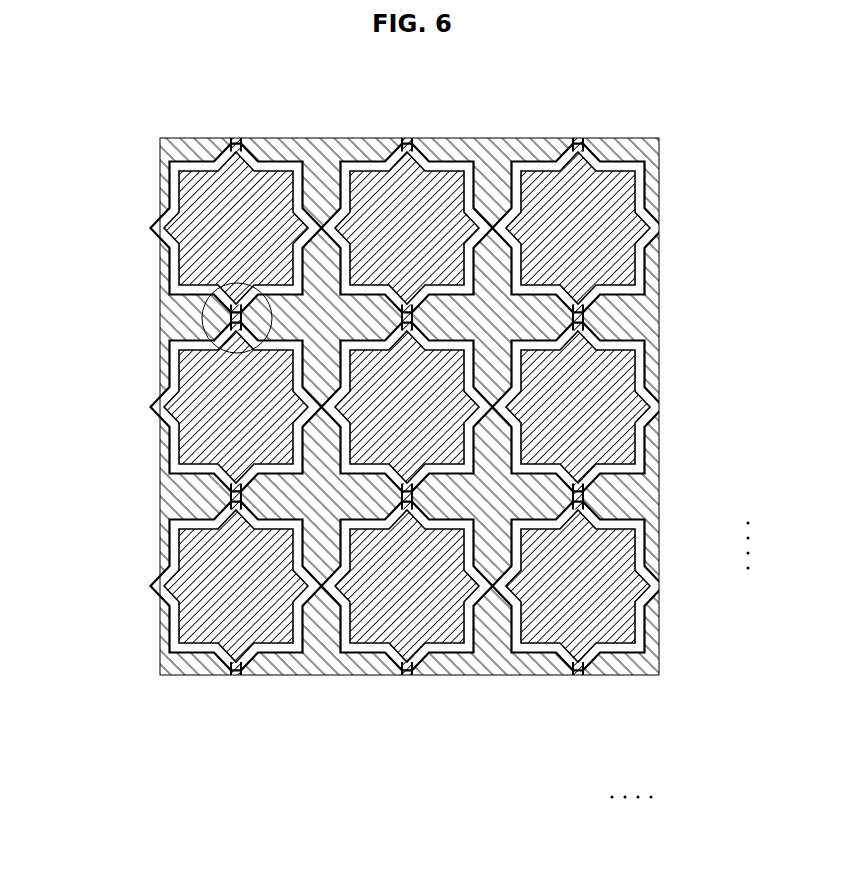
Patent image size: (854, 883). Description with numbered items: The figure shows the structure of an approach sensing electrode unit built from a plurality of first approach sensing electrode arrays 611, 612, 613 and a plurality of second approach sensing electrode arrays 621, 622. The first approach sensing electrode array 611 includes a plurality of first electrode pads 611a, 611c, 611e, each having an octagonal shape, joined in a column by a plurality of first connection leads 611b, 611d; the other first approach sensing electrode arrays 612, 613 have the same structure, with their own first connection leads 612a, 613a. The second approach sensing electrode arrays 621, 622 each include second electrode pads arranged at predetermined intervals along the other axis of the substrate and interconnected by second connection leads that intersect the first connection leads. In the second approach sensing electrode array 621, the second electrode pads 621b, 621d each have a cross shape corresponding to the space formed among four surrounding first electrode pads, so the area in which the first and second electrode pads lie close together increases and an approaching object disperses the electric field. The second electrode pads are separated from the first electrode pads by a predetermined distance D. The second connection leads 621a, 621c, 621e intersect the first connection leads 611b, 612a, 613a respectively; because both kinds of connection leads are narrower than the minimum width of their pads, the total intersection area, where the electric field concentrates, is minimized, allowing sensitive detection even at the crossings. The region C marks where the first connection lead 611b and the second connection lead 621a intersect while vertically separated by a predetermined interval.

The first approach sensing electrode array 611 is at (188, 473).
The first approach sensing electrode array 612 is at (407, 452).
The first approach sensing electrode array 613 is at (578, 452).
The first electrode pad 611a is at (213, 230).
The first connection lead 611b is at (226, 327).
The first electrode pad 611c is at (206, 410).
The first connection lead 611d is at (232, 494).
The first electrode pad 611e is at (212, 593).
The first connection lead 612a is at (408, 313).
The first connection lead 613a is at (500, 267).
The second approach sensing electrode array 621 is at (462, 369).
The second connection lead 621a is at (244, 316).
The second electrode pad 621b is at (324, 265).
The second connection lead 621c is at (413, 317).
The second electrode pad 621d is at (493, 267).
The second connection lead 621e is at (585, 318).
The second approach sensing electrode array 622 is at (642, 495).
The predetermined distance D is at (176, 177).
The region C is at (203, 323).